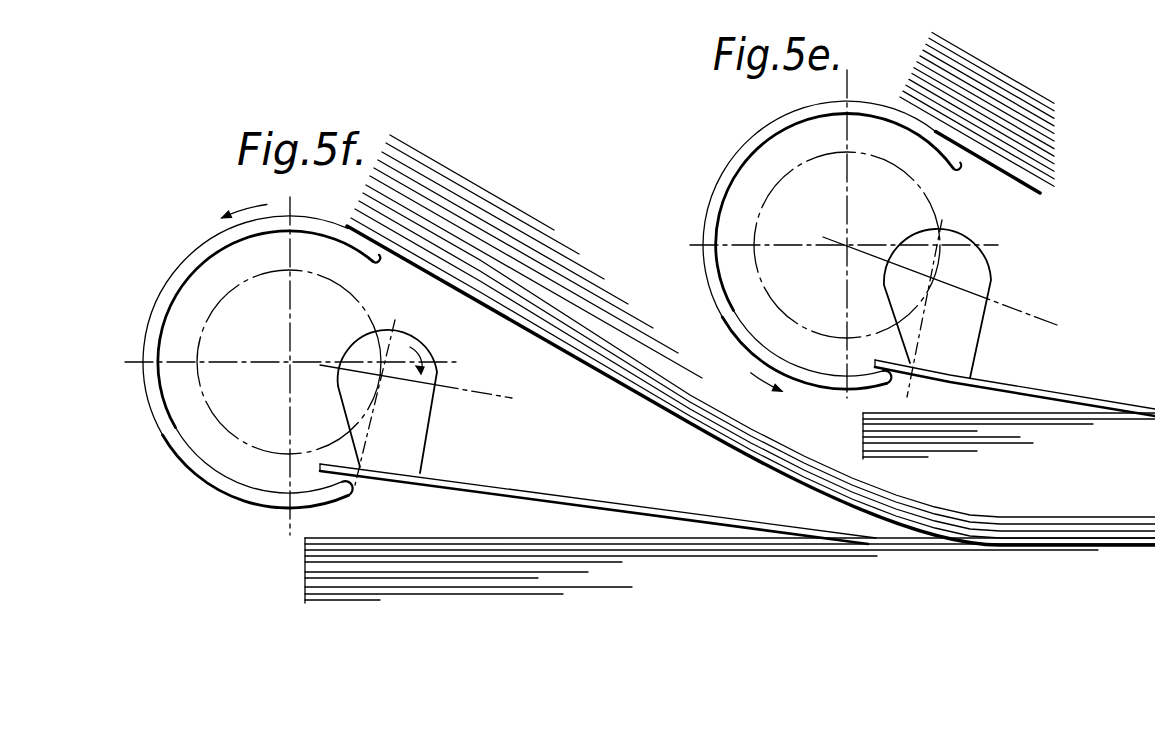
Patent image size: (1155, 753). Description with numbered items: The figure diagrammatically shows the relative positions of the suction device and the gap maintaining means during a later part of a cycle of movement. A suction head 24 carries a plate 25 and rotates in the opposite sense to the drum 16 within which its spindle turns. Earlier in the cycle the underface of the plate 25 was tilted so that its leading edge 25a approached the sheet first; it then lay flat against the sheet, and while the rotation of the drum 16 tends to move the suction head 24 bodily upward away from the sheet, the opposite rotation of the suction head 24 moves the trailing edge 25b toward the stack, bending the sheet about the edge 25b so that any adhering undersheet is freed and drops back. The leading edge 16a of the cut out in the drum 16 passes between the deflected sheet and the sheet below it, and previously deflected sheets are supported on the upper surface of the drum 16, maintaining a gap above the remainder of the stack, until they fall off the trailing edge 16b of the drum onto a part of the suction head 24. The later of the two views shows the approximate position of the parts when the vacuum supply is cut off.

In FIG. 5F, the drum 16 is at (175, 274).
In FIG. 5E, the drum 16 is at (733, 165).
In FIG. 5F, the leading edge of the cut out in the drum 16a is at (349, 491).
In FIG. 5E, the leading edge of the cut out in the drum 16a is at (872, 385).
In FIG. 5F, the trailing edge of the drum 16b is at (378, 257).
In FIG. 5E, the trailing edge of the drum 16b is at (963, 167).
In FIG. 5F, the suction head 24 is at (453, 378).
In FIG. 5E, the suction head 24 is at (955, 273).
In FIG. 5F, the plate 25 is at (421, 471).
In FIG. 5E, the plate 25 is at (975, 375).
In FIG. 5F, the leading edge of the plate 25a is at (385, 466).
In FIG. 5E, the leading edge of the plate 25a is at (937, 360).
In FIG. 5F, the trailing edge of the plate 25b is at (430, 474).
In FIG. 5E, the trailing edge of the plate 25b is at (973, 378).